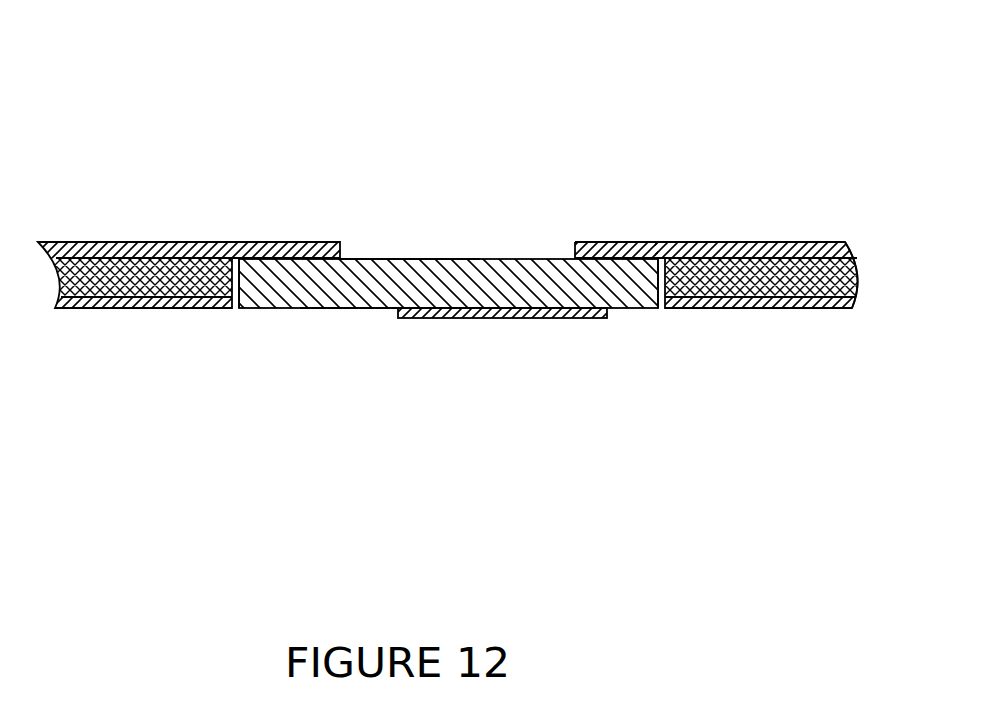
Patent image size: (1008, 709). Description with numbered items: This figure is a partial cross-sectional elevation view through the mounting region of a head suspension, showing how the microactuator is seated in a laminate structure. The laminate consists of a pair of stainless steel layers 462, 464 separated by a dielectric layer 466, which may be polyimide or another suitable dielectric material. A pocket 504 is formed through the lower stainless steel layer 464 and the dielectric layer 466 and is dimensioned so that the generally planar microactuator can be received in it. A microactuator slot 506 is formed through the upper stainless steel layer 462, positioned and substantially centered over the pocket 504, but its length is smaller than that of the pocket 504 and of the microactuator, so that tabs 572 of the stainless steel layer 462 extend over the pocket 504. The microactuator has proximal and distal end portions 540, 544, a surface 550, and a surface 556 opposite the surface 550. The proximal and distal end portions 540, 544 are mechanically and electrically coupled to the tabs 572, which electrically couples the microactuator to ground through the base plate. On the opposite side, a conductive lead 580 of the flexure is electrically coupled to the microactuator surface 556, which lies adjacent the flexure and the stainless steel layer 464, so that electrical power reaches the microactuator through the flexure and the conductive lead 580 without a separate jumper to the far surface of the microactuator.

The stainless steel layer 462 is at (695, 241).
The stainless steel layer 464 is at (792, 308).
The dielectric layer 466 is at (858, 278).
The pocket 504 is at (250, 317).
The microactuator slot 506 is at (480, 258).
The proximal end portion 540 is at (628, 308).
The distal end portion 544 is at (288, 310).
The surface 550 is at (405, 258).
The surface 556 is at (355, 310).
The tabs 572 is at (115, 242).
The conductive lead 580 is at (528, 318).